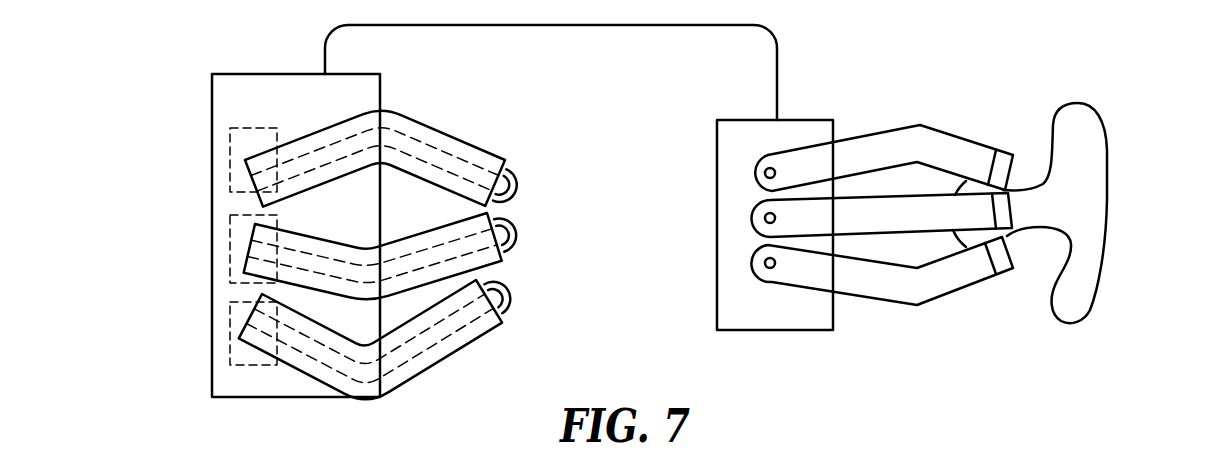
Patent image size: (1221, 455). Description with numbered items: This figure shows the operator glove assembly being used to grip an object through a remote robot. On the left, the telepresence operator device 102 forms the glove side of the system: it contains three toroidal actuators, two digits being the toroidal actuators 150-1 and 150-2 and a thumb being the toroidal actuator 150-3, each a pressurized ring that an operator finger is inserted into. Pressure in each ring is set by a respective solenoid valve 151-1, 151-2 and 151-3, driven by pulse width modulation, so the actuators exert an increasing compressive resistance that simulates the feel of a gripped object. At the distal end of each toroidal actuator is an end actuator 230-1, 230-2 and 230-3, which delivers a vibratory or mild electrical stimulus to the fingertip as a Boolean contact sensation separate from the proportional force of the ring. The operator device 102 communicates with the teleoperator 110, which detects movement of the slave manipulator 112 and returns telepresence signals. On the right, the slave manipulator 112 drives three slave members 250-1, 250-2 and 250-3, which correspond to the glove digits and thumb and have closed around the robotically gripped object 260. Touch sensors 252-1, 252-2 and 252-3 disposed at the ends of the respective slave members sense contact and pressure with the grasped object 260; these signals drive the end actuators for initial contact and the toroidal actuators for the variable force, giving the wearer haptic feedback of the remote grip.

The telepresence operator device 102 is at (186, 40).
The teleoperator 110 is at (266, 73).
The slave manipulator 112 is at (778, 322).
The toroidal actuator 150-1 is at (483, 150).
The toroidal actuator 150-2 is at (502, 262).
The toroidal actuator 150-3 is at (483, 338).
The solenoid valve 151-1 is at (238, 145).
The solenoid valve 151-2 is at (237, 230).
The solenoid valve 151-3 is at (237, 307).
The end actuator 230-1 is at (511, 170).
The end actuator 230-2 is at (517, 228).
The end actuator 230-3 is at (510, 300).
The slave member 250-1 is at (927, 127).
The slave member 250-2 is at (960, 212).
The slave member 250-3 is at (940, 293).
The touch sensor 252-1 is at (1005, 157).
The touch sensor 252-2 is at (1007, 213).
The touch sensor 252-3 is at (1007, 268).
The robotically gripped object 260 is at (1085, 295).